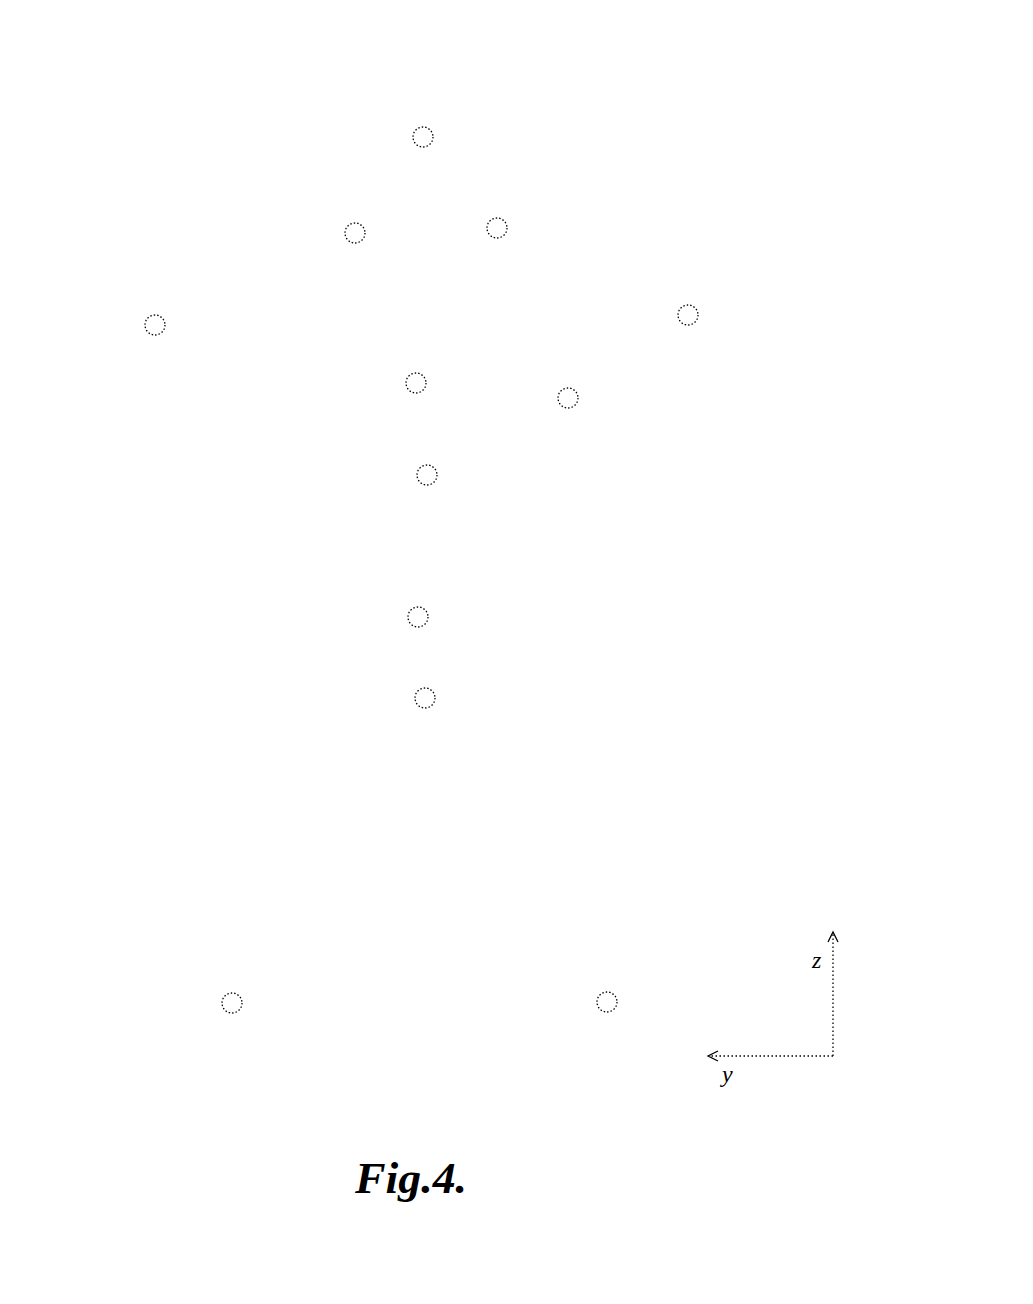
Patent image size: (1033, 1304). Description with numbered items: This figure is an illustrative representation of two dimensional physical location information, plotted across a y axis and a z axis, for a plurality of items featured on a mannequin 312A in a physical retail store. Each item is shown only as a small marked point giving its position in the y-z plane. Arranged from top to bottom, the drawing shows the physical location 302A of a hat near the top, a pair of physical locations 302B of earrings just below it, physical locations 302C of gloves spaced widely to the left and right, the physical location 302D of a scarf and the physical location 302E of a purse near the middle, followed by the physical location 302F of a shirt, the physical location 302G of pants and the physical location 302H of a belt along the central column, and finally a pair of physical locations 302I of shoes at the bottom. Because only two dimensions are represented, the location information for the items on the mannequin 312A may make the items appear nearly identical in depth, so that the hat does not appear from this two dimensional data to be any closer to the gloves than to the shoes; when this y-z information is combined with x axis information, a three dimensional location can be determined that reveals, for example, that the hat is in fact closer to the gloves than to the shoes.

The mannequin 312A is at (722, 58).
The physical location of a hat 302A is at (416, 144).
The physical locations of earrings 302B is at (490, 235).
The physical locations of gloves 302C is at (148, 332).
The physical location of a scarf 302D is at (409, 390).
The physical location of a purse 302E is at (561, 405).
The physical location of a shirt 302F is at (420, 482).
The physical location of pants 302G is at (411, 624).
The physical location of a belt 302H is at (418, 705).
The physical locations of shoes 302I is at (225, 1010).